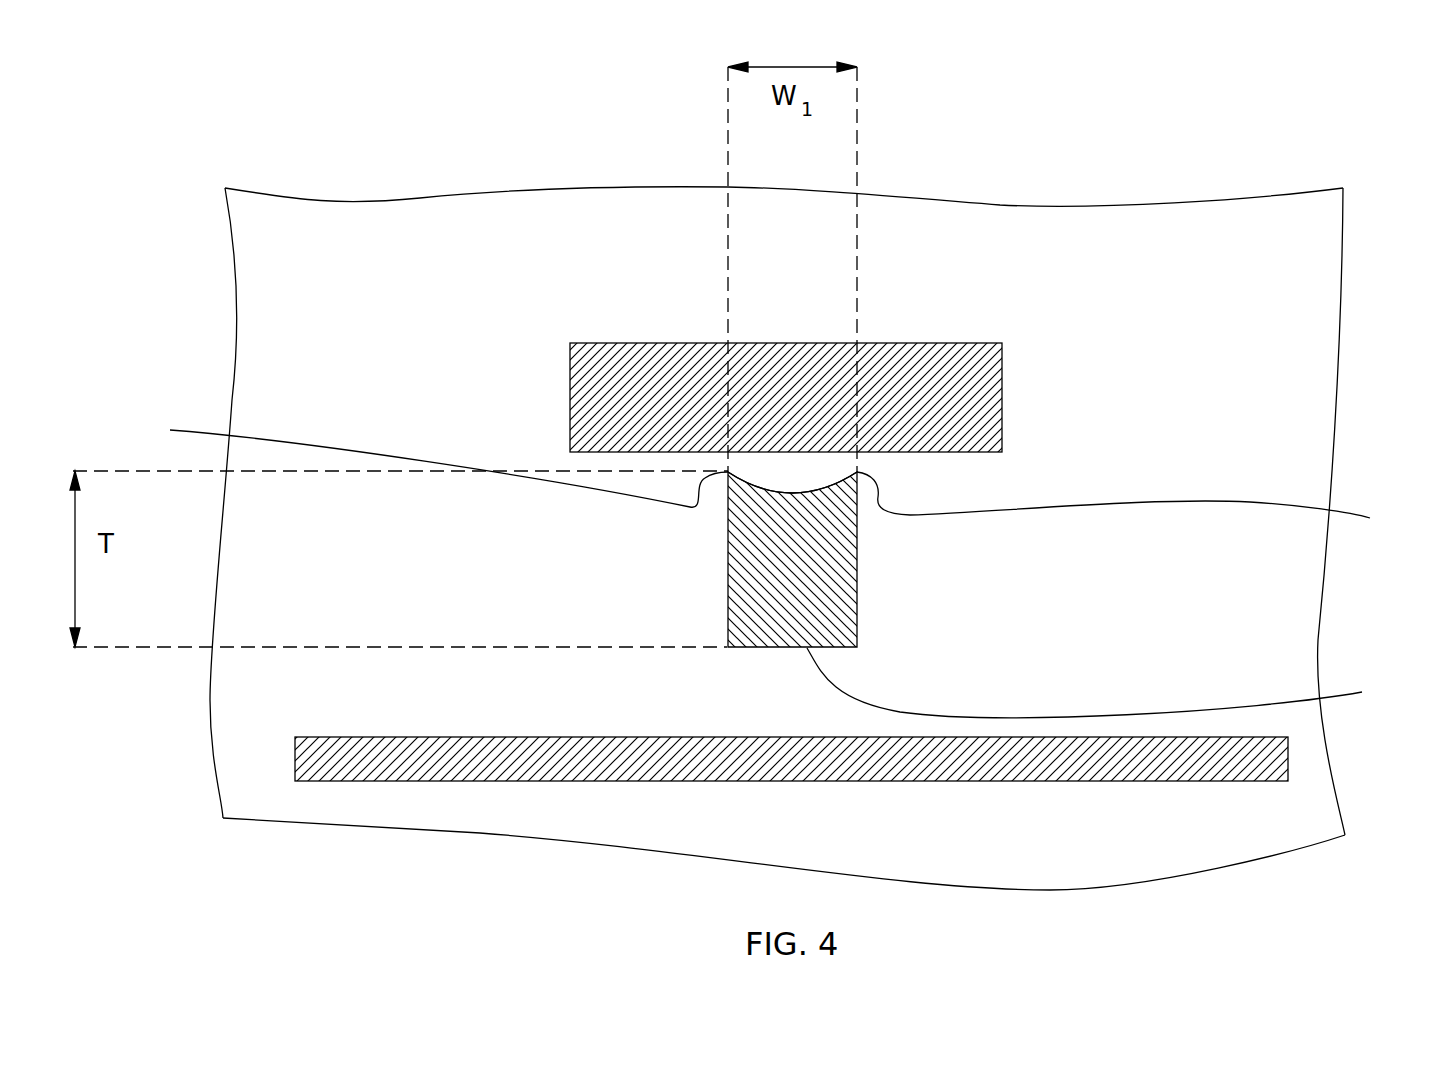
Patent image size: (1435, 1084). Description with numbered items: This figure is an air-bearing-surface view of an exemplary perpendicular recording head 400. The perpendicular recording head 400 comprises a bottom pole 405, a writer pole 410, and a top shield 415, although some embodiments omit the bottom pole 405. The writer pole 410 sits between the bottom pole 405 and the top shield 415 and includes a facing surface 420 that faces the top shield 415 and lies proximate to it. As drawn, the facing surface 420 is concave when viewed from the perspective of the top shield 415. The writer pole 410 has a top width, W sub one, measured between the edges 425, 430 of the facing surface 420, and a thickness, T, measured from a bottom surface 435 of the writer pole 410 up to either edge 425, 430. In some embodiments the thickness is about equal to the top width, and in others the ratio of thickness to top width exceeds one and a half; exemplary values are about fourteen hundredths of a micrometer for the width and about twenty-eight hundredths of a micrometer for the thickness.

The perpendicular recording head 400 is at (1266, 194).
The bottom pole 405 is at (295, 760).
The writer pole 410 is at (792, 560).
The top shield 415 is at (705, 343).
The facing surface 420 is at (777, 492).
The edge 425 is at (425, 461).
The edge 430 is at (1142, 505).
The bottom surface 435 is at (1112, 683).